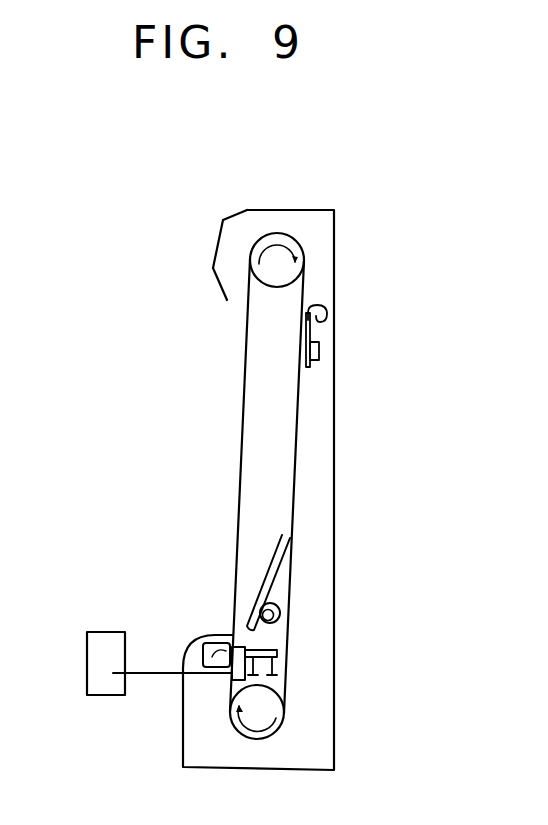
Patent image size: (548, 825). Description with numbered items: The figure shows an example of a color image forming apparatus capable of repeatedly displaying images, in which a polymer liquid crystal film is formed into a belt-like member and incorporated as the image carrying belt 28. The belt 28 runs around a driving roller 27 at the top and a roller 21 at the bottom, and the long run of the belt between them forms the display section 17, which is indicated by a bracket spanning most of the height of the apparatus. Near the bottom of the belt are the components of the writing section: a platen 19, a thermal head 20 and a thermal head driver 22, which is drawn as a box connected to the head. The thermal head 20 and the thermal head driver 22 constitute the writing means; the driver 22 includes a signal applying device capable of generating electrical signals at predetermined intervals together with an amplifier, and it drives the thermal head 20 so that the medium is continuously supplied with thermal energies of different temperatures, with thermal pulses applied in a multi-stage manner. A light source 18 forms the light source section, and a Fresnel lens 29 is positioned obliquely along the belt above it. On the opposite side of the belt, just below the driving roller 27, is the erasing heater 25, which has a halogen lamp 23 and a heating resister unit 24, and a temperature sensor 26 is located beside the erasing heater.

The display section 17 is at (82, 298).
The light source 18 is at (275, 605).
The platen 19 is at (230, 648).
The thermal head 20 is at (258, 652).
The roller 21 is at (285, 718).
The thermal head driver 22 is at (90, 650).
The halogen lamp 23 is at (318, 312).
The heating resister unit 24 is at (310, 333).
The erasing heater 25 is at (394, 342).
The temperature sensor 26 is at (318, 352).
The driving roller 27 is at (305, 250).
The image carrying belt 28 is at (298, 487).
The Fresnel lens 29 is at (284, 535).